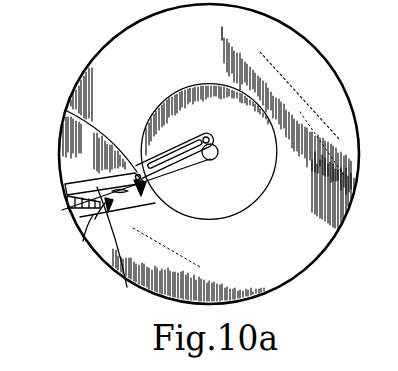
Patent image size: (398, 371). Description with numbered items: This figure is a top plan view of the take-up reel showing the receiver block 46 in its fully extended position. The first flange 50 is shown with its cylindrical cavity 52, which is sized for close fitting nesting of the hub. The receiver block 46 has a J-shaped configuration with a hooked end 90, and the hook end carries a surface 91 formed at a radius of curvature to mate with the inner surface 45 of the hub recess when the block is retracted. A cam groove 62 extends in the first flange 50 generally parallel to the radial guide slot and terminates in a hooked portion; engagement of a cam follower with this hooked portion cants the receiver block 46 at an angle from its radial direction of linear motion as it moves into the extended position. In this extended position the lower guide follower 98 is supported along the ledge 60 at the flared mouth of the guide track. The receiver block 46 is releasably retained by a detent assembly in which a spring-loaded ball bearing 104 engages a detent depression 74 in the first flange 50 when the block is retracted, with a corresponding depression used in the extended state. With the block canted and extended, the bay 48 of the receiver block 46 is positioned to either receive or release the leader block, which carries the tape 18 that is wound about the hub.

The tape 18 is at (389, 201).
The inner surface of recess 45 is at (216, 156).
The receiver block 46 is at (92, 185).
The bay 48 is at (125, 280).
The first flange 50 is at (298, 53).
The cylindrical cavity 52 is at (203, 82).
The ledge 60 is at (100, 245).
The cam groove 62 is at (157, 108).
The detent depression 74 is at (210, 138).
The hooked end 90 is at (148, 212).
The surface of hook end 91 is at (165, 187).
The guide follower 98 is at (72, 224).
The ball bearing 104 is at (66, 110).